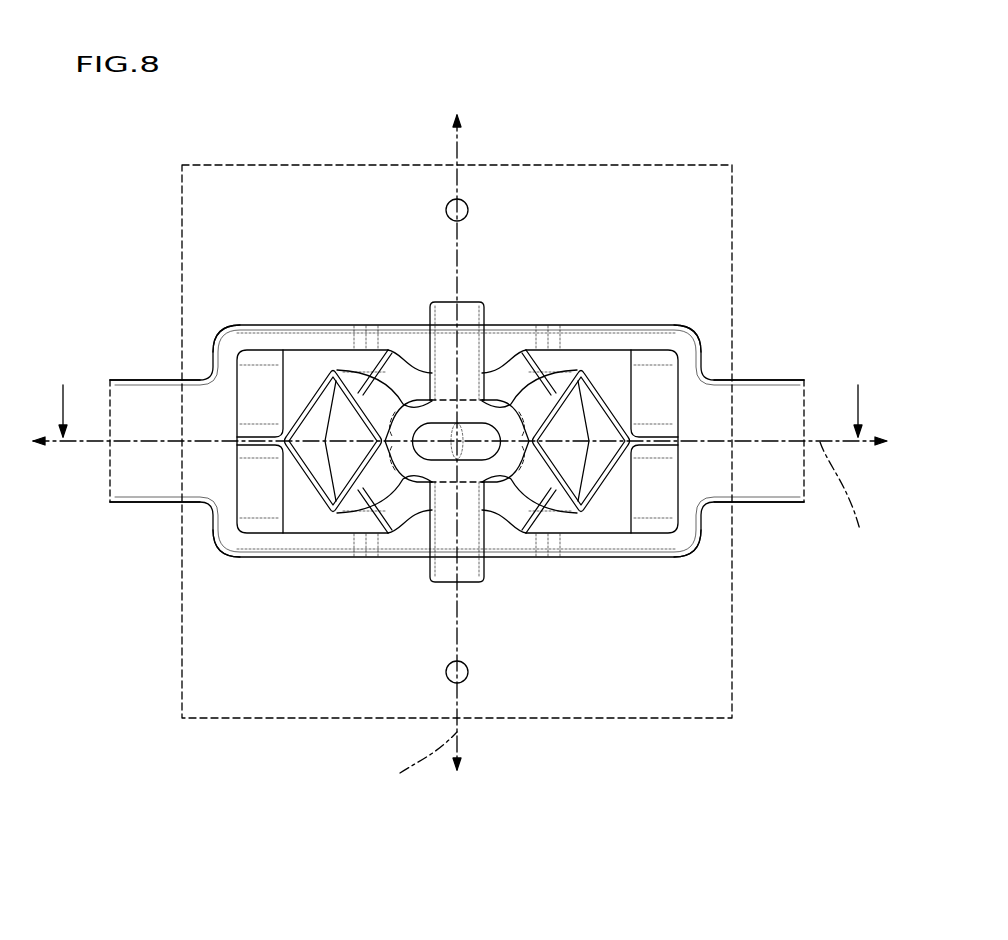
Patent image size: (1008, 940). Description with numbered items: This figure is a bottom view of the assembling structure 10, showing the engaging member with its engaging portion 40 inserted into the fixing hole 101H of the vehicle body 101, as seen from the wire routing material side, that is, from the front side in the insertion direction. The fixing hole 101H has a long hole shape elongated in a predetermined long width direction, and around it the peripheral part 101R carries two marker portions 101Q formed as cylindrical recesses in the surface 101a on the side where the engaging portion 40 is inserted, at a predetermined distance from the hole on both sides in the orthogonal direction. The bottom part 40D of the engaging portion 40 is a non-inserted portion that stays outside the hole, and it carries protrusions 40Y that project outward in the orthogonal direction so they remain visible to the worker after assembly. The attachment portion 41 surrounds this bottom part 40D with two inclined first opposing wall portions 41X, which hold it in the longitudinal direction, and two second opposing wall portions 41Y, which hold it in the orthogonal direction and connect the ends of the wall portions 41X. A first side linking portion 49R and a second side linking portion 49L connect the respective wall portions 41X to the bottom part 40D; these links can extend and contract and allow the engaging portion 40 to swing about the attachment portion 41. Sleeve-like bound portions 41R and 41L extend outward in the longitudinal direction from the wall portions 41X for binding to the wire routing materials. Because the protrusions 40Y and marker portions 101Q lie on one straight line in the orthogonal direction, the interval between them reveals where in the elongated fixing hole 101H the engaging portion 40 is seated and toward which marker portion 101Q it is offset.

The assembling structure 10 is at (752, 150).
The vehicle body panel portion 101 is at (620, 183).
The surface 101a is at (612, 270).
The peripheral part 101R is at (352, 588).
The marker portion 101Q is at (447, 206).
The fixing hole 101H is at (496, 485).
The engaging portion 40 is at (486, 592).
The protrusion 40Y is at (465, 333).
The bottom part 40D is at (503, 412).
The attachment portion 41 is at (227, 547).
The bound portion 41L is at (152, 400).
The bound portion 41R is at (762, 403).
The first opposing wall portion 41X is at (230, 520).
The second opposing wall portion 41Y is at (263, 342).
The second side linking portion 49L is at (309, 380).
The first side linking portion 49R is at (600, 521).